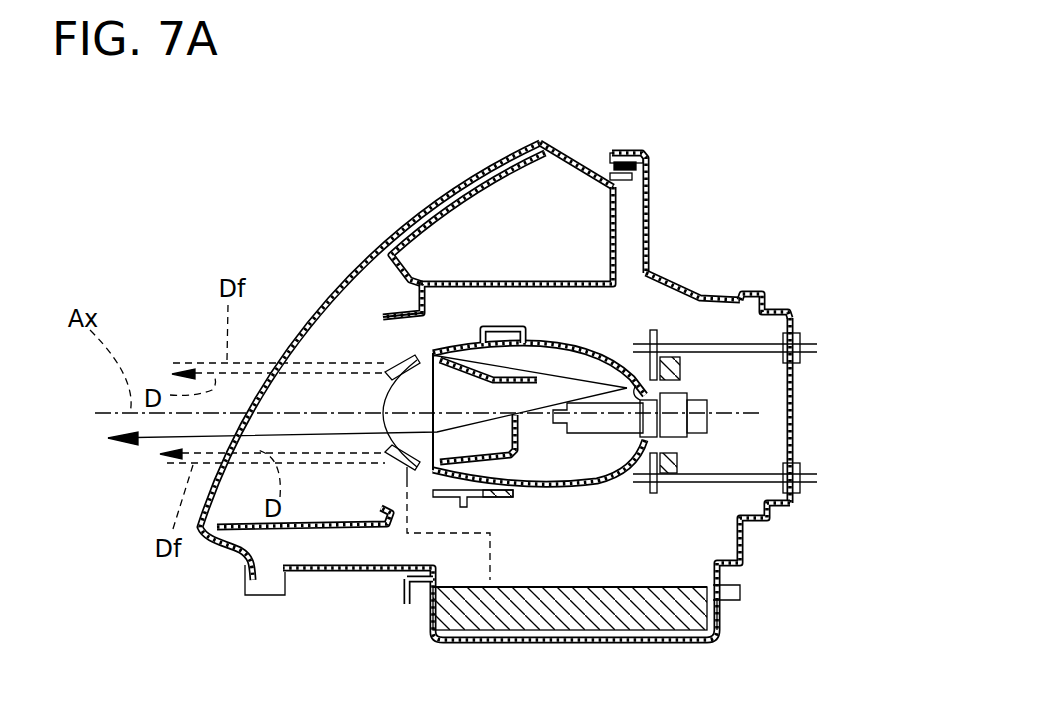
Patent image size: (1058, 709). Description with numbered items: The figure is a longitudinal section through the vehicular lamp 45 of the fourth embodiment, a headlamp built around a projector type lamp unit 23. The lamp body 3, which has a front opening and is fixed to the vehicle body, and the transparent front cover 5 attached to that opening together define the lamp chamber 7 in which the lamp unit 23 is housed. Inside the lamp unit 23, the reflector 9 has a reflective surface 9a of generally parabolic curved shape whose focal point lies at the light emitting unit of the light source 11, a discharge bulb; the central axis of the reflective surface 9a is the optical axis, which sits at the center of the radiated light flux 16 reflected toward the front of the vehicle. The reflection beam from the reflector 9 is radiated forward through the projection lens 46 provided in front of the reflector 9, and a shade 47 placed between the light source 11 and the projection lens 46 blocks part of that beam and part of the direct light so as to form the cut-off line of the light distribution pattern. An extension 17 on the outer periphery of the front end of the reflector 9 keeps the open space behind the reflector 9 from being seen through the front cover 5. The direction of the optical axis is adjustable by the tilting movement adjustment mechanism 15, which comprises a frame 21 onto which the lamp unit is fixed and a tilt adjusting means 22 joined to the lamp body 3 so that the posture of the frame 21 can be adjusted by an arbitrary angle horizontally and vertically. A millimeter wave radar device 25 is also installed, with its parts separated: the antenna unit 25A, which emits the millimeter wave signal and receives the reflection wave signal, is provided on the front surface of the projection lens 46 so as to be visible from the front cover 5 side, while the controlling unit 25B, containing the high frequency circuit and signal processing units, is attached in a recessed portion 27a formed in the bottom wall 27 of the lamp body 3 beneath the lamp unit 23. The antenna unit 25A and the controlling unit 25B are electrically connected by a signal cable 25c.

The lamp body 3 is at (682, 283).
The front cover 5 is at (392, 236).
The lamp chamber 7 is at (648, 280).
The reflector 9 is at (581, 340).
The reflective surface 9a is at (613, 332).
The light source 11 is at (590, 398).
The tilting movement adjustment mechanism 15 is at (778, 354).
The radiated light flux 16 is at (150, 440).
The extension 17 is at (297, 530).
The frame 21 is at (700, 298).
The tilt adjusting means 22 is at (748, 343).
The lamp unit 23 is at (423, 335).
The millimeter wave radar device 25 is at (557, 548).
The antenna unit 25A is at (390, 360).
The controlling unit 25B is at (587, 587).
The signal cable 25c is at (500, 553).
The bottom wall 27 is at (380, 570).
The recessed portion 27a is at (713, 613).
The vehicular lamp 45 is at (582, 148).
The projection lens 46 is at (423, 380).
The shade 47 is at (520, 433).